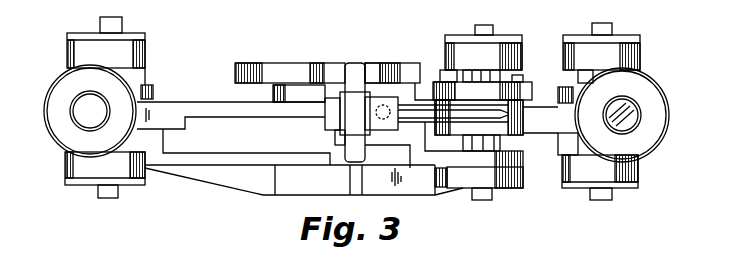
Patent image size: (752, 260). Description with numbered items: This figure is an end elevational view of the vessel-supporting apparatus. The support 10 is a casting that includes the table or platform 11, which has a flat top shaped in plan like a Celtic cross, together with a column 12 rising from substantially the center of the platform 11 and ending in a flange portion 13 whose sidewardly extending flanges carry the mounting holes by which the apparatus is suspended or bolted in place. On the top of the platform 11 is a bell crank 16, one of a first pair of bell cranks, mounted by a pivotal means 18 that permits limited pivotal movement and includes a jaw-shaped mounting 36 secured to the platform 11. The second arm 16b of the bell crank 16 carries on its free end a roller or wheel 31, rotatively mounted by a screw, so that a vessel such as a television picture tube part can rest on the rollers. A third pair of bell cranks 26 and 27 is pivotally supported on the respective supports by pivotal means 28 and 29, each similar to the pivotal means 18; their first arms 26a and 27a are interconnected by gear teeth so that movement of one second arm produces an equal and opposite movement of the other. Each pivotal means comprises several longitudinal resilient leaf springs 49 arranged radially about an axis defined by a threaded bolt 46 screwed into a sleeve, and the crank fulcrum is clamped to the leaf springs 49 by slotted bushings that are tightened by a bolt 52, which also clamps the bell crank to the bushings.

The support 10 is at (189, 182).
The table or platform 11 is at (227, 158).
The column 12 is at (272, 97).
The flange portion 13 is at (253, 63).
The bell crank 16 is at (524, 145).
The second arm 16b is at (376, 80).
The pivotal means 18 is at (464, 42).
The bell crank 26 is at (558, 88).
The first arm 26a is at (560, 134).
The bell crank 27 is at (155, 89).
The first arm 27a is at (215, 113).
The pivotal means 28 is at (637, 42).
The pivotal means 29 is at (133, 37).
The roller or wheel 31 is at (45, 95).
The jaw-shaped mounting 36 is at (422, 63).
The threaded bolt 46 is at (492, 26).
The leaf spring 49 is at (497, 71).
The bolt 52 is at (448, 72).